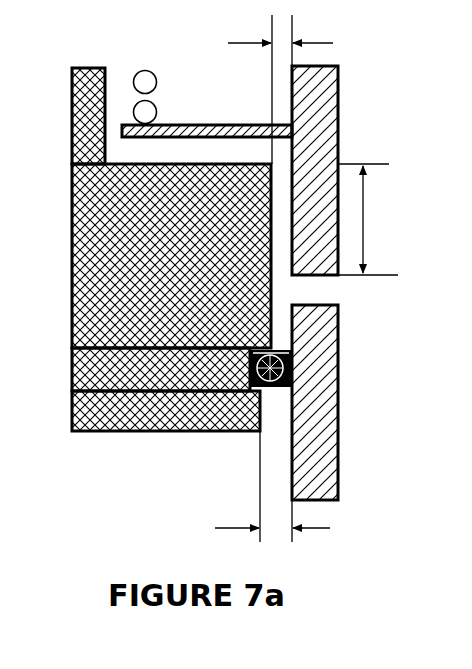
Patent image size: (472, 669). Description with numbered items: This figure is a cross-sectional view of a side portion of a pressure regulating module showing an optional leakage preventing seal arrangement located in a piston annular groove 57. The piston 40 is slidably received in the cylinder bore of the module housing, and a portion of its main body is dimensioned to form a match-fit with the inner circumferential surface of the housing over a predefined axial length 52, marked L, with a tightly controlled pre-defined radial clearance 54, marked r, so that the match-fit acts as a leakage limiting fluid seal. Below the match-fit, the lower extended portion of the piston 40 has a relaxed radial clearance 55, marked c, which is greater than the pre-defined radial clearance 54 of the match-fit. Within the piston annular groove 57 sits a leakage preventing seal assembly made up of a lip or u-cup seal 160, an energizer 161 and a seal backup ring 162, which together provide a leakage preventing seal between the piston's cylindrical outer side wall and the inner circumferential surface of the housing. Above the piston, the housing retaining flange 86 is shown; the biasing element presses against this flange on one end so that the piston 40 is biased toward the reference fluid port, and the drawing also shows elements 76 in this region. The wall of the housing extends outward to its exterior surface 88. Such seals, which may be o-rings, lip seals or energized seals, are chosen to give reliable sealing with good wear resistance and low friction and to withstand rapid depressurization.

The piston 40 is at (88, 198).
The predefined axial length 52 is at (363, 240).
The pre-defined radial clearance 54 is at (250, 43).
The relaxed radial clearance 55 is at (255, 526).
The piston annular groove 57 is at (82, 366).
The rolling elements 76 is at (145, 70).
The housing retaining flange 86 is at (218, 125).
The exterior surface 88 is at (338, 488).
The lip or u-cup seal 160 is at (288, 380).
The energizer 161 is at (286, 368).
The seal backup ring 162 is at (284, 352).